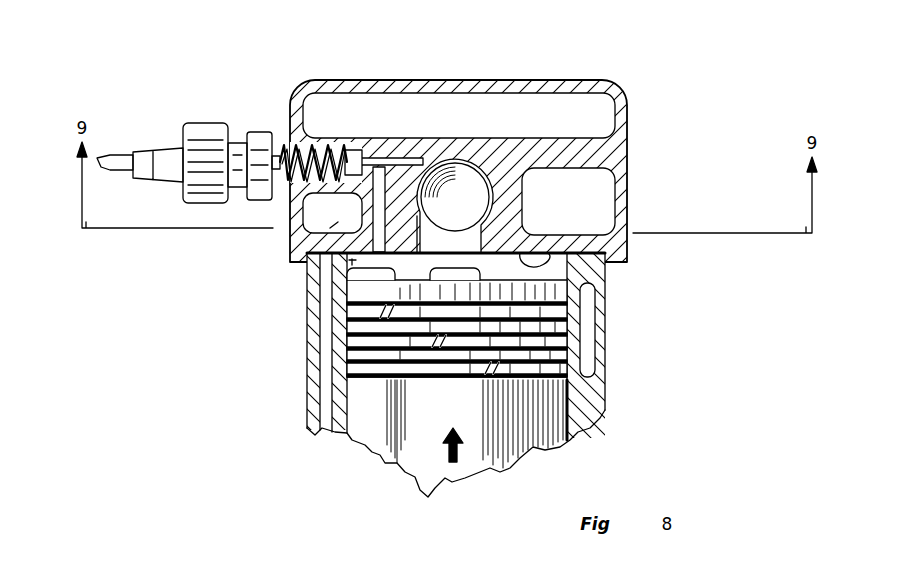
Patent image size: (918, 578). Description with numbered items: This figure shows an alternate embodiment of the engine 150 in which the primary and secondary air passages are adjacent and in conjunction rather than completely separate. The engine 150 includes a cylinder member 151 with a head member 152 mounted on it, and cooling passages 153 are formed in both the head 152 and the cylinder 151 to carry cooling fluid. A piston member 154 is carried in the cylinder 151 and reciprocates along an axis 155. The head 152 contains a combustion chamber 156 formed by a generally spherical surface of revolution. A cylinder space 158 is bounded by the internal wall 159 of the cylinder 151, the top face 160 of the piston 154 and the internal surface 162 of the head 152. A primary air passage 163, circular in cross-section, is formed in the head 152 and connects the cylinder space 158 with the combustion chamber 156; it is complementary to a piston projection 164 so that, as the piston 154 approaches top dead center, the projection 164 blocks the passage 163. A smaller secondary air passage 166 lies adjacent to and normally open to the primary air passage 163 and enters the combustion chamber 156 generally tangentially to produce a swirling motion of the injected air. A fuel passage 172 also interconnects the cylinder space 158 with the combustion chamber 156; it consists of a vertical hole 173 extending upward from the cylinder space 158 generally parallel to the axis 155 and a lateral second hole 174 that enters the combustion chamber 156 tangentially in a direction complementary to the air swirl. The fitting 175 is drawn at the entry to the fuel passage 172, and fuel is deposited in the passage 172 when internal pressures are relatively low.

The engine 150 is at (285, 376).
The cylinder member 151 is at (605, 340).
The head member 152 is at (627, 110).
The cooling passages 153 is at (583, 104).
The piston member 154 is at (363, 440).
The axis of reciprocation 155 is at (443, 453).
The combustion chamber 156 is at (478, 195).
The cylinder space 158 is at (350, 263).
The internal wall 159 is at (560, 447).
The top face 160 is at (329, 316).
The internal surface 162 is at (548, 253).
The primary air passage 163 is at (352, 306).
The piston projection 164 is at (515, 273).
The secondary air passage 166 is at (360, 308).
The fuel passage 172 is at (358, 146).
The vertical hole 173 is at (333, 225).
The lateral second hole 174 is at (406, 167).
The fitting 175 is at (197, 114).